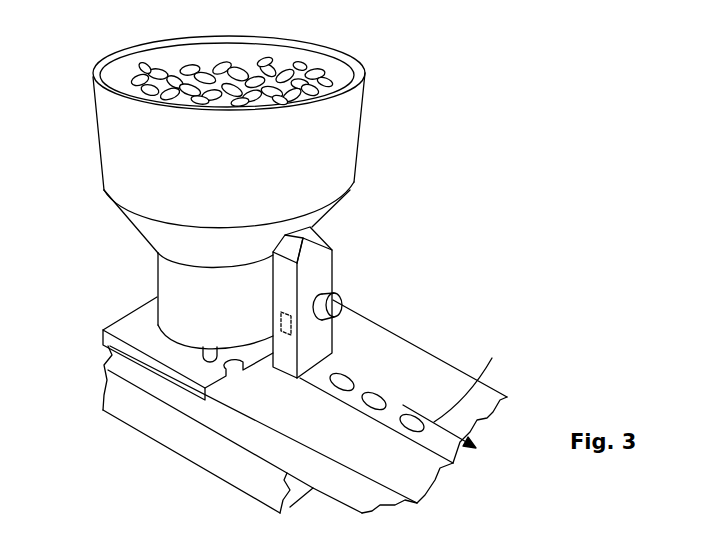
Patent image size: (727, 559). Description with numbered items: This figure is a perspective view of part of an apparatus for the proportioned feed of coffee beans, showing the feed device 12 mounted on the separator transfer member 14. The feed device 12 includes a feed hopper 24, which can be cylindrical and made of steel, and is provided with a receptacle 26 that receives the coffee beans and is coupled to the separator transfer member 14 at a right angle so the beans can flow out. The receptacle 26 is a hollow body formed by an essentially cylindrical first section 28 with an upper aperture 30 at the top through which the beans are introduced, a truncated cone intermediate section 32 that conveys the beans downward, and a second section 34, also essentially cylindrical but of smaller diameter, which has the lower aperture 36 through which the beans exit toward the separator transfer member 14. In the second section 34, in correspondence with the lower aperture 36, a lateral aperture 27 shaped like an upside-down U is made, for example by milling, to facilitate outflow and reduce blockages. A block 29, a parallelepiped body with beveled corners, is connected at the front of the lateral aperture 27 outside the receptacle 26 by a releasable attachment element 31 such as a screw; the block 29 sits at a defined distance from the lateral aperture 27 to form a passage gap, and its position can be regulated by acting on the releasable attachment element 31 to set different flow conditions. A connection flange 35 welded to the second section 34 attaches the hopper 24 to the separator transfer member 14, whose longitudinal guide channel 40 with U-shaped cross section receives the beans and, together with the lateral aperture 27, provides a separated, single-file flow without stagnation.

The feed device 12 is at (226, 185).
The separator transfer member 14 is at (305, 406).
The feed hopper 24 is at (232, 131).
The receptacle 26 is at (358, 173).
The lateral aperture 27 is at (280, 310).
The first section 28 is at (346, 123).
The block 29 is at (322, 298).
The upper aperture 30 is at (312, 61).
The releasable attachment element 31 is at (334, 311).
The truncated cone intermediate section 32 is at (308, 242).
The second section 34 is at (170, 284).
The connection flange 35 is at (127, 330).
The lower aperture 36 is at (214, 350).
The guide channel 40 is at (378, 384).